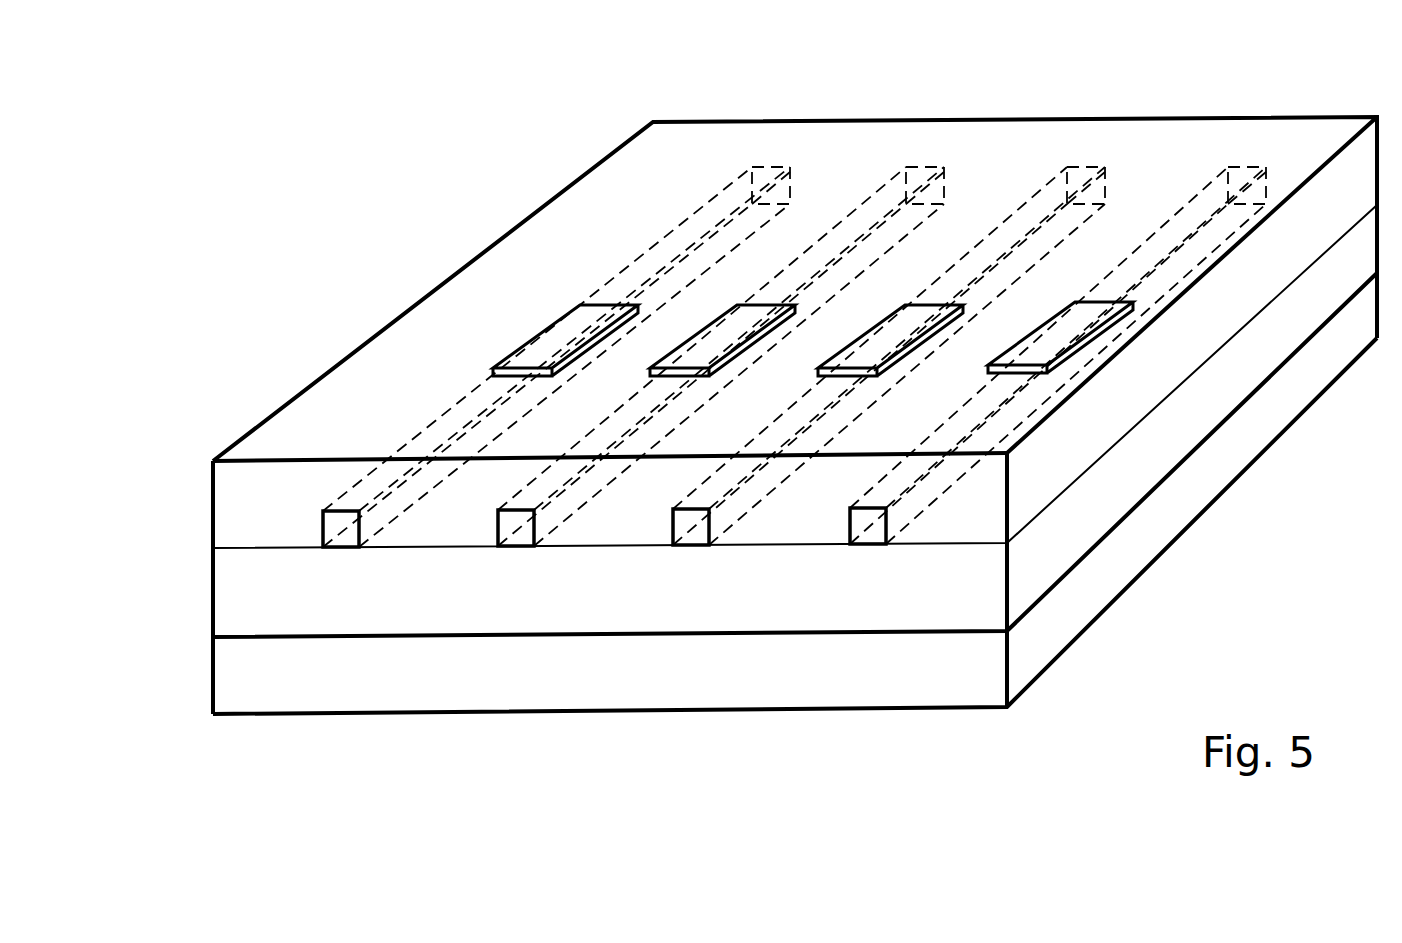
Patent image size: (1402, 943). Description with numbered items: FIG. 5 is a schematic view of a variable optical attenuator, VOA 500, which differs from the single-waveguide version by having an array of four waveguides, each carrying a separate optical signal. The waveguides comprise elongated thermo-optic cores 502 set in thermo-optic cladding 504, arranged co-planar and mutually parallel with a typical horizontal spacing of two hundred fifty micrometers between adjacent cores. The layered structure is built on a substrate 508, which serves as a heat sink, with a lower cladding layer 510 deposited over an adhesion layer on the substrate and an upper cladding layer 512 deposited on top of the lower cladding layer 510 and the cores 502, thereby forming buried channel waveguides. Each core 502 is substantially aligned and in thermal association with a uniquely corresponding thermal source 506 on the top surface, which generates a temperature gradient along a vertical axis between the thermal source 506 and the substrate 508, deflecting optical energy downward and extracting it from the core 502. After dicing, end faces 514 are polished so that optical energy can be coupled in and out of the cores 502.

The VOA 500 is at (247, 715).
The thermo-optic cores 502 is at (867, 550).
The thermo-optic cladding 504 is at (967, 571).
The thermal source 506 is at (1058, 333).
The substrate 508 is at (948, 671).
The lower cladding layer 510 is at (232, 598).
The upper cladding layer 512 is at (232, 507).
The end faces 514 is at (1017, 120).